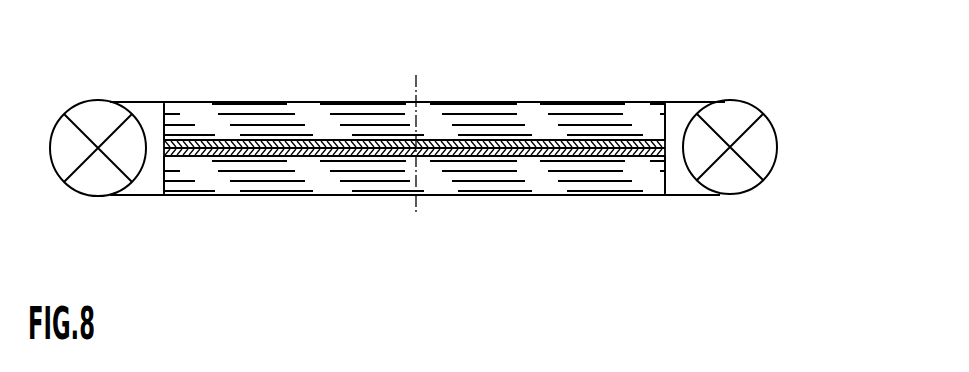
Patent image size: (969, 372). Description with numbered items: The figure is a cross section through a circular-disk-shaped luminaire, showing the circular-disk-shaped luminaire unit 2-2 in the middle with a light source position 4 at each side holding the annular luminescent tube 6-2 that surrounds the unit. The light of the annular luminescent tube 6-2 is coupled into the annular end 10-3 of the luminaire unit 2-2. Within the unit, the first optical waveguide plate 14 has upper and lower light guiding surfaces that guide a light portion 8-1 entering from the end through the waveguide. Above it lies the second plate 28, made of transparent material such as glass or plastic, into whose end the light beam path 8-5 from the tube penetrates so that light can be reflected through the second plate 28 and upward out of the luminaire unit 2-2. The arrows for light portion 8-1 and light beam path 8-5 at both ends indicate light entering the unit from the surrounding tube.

The light source position 4 is at (764, 73).
The annular luminescent tube 6-2 is at (774, 127).
The circular-disk-shaped luminaire unit 2-2 is at (563, 89).
The second plate 28 is at (484, 125).
The first optical waveguide plate 14 is at (510, 170).
The annular end 10-3 is at (680, 109).
The light beam path 8-5 is at (150, 117).
The light portion 8-1 is at (149, 173).